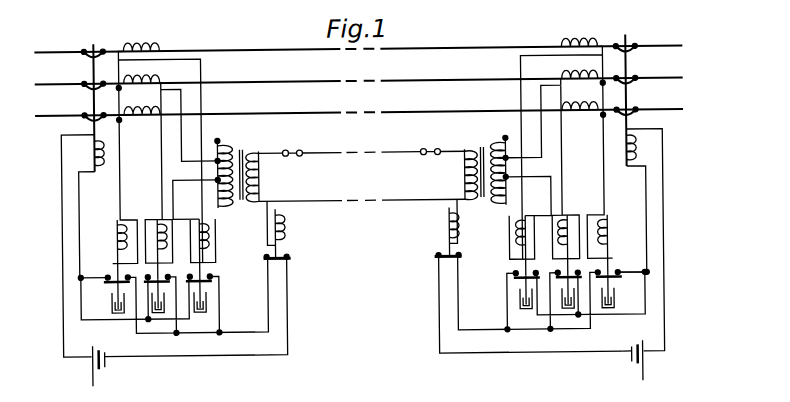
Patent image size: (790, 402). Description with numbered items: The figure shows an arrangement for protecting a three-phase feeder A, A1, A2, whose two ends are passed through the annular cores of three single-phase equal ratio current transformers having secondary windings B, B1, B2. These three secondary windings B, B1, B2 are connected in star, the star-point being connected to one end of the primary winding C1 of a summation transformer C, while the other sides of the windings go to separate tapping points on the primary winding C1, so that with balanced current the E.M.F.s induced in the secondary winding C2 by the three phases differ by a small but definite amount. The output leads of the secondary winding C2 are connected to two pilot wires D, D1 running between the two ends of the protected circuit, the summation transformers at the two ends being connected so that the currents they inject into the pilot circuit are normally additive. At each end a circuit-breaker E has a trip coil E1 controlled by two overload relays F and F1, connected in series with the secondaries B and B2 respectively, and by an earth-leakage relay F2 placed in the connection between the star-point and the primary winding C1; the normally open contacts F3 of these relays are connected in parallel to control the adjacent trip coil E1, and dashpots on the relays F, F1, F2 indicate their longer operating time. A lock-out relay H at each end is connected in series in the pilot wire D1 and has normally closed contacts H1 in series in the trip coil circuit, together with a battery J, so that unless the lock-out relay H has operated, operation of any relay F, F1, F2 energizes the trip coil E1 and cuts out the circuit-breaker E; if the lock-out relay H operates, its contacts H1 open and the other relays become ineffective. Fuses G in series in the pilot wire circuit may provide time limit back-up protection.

The three-phase feeder conductor A is at (316, 47).
The three-phase feeder conductor A1 is at (319, 80).
The three-phase feeder conductor A2 is at (319, 111).
The current transformer secondary winding B is at (163, 47).
The current transformer secondary winding B1 is at (163, 80).
The current transformer secondary winding B2 is at (163, 111).
The summation transformer C is at (242, 150).
The primary winding of summation transformer C1 is at (229, 146).
The secondary winding of summation transformer C2 is at (260, 178).
The pilot wire D is at (341, 151).
The pilot wire D1 is at (334, 198).
The circuit-breaker E is at (92, 68).
The trip coil E1 is at (94, 152).
The overload relay F is at (198, 222).
The overload relay F1 is at (156, 226).
The earth-leakage relay F2 is at (114, 226).
The normally open contacts F3 is at (119, 281).
The fuses G is at (301, 156).
The lock-out relay H is at (284, 222).
The normally closed contacts H1 is at (291, 259).
The battery J is at (365, 370).